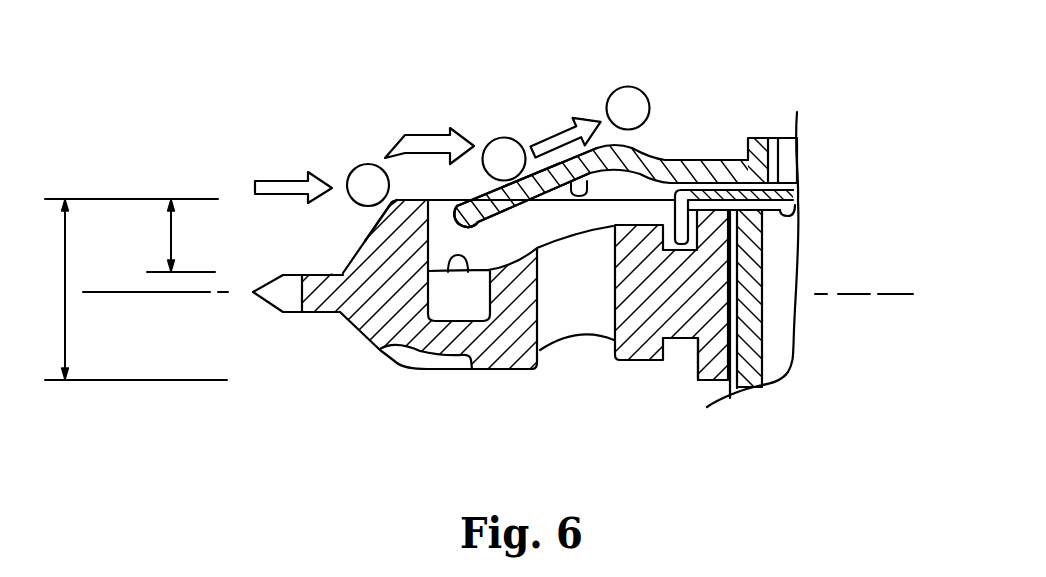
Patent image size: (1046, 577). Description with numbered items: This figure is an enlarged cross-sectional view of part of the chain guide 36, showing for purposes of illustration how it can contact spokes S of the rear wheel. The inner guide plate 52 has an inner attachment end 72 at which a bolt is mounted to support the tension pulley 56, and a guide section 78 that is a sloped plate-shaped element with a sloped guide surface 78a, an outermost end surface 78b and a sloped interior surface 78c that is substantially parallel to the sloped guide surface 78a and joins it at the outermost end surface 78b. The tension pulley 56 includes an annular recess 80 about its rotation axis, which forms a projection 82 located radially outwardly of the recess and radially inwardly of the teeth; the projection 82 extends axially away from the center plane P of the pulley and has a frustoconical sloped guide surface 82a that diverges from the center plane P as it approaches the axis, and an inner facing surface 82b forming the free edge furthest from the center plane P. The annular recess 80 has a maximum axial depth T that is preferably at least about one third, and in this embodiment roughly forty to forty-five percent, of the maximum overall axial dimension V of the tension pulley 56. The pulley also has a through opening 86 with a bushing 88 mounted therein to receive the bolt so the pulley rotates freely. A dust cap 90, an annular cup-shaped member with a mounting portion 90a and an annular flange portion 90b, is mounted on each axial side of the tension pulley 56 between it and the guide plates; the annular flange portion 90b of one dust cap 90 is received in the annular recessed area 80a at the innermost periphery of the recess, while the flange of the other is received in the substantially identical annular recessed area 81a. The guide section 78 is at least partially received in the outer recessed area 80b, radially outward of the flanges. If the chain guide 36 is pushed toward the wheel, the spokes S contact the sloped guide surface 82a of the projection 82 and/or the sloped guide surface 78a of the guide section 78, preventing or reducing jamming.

The chain guide 36 is at (728, 96).
The inner guide plate 52 is at (724, 148).
The tension pulley 56 is at (324, 332).
The inner attachment end 72 is at (689, 158).
The guide section 78 is at (495, 230).
The sloped guide surface 78a is at (530, 190).
The outermost end surface 78b is at (457, 211).
The sloped interior surface 78c is at (586, 186).
The annular recess 80 is at (442, 234).
The annular recessed area 80a is at (671, 244).
The outer recessed area 80b is at (468, 272).
The annular recessed area 81a is at (686, 378).
The projection 82 is at (360, 240).
The sloped guide surface 82a is at (368, 226).
The inner facing surface 82b is at (397, 200).
The through opening 86 is at (737, 340).
The bushing 88 is at (765, 250).
The dust cap 90 is at (904, 127).
The mounting portion 90a is at (800, 192).
The annular flange portion 90b is at (796, 208).
The spokes S is at (624, 87).
The maximum axial depth T is at (171, 232).
The maximum overall axial dimension V is at (65, 328).
The center plane P is at (873, 296).